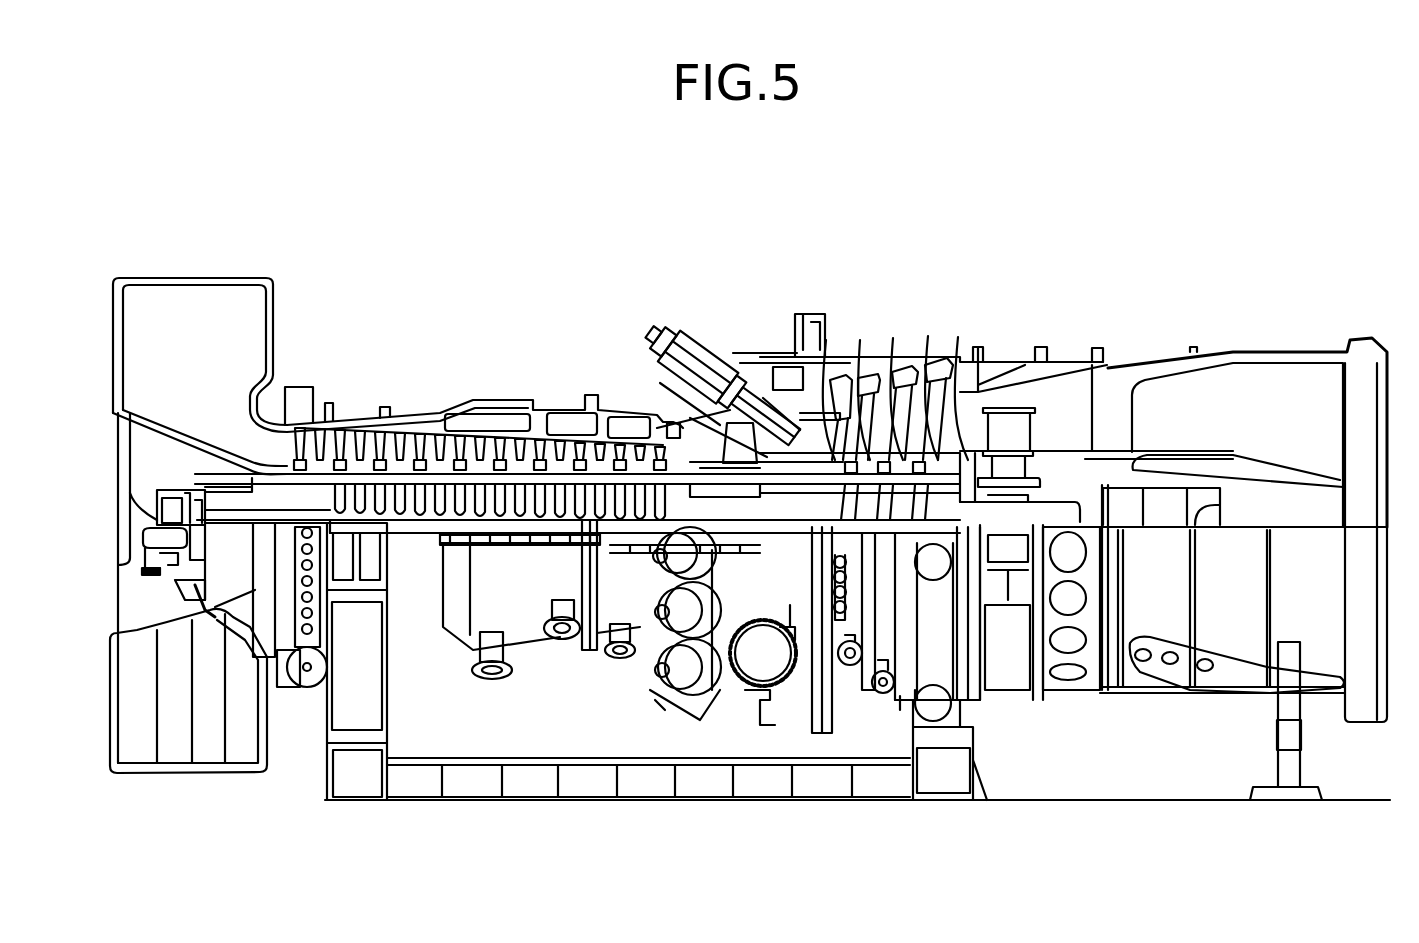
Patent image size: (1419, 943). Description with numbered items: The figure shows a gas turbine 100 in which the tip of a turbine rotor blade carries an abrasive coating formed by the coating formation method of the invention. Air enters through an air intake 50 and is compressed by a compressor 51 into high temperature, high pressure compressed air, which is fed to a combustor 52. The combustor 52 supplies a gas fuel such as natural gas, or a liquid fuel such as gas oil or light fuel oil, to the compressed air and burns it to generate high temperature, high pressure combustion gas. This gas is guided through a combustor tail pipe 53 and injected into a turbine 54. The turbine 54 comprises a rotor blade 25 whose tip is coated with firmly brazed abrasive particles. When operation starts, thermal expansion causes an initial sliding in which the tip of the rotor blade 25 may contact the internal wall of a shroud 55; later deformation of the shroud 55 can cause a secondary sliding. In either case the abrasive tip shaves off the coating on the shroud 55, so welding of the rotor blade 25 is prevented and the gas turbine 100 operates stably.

The gas turbine 100 is at (330, 190).
The air intake 50 is at (195, 297).
The compressor 51 is at (640, 280).
The combustor 52 is at (660, 338).
The combustor tail pipe 53 is at (777, 410).
The turbine 54 is at (978, 242).
The shroud 55 is at (843, 443).
The rotor blade 25 is at (965, 327).